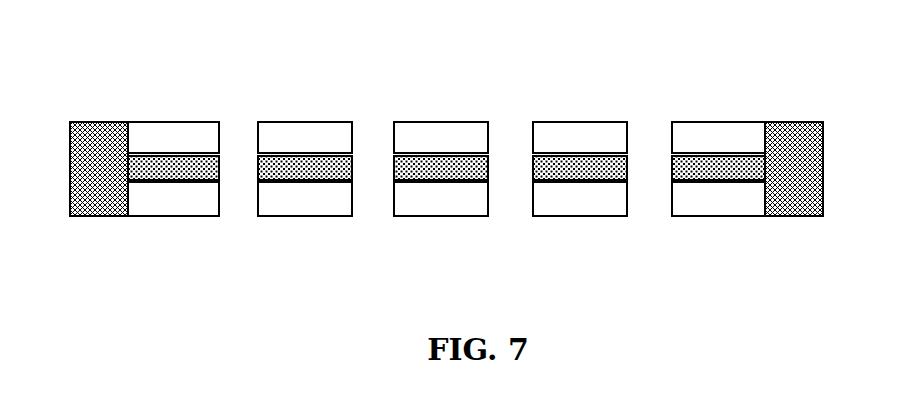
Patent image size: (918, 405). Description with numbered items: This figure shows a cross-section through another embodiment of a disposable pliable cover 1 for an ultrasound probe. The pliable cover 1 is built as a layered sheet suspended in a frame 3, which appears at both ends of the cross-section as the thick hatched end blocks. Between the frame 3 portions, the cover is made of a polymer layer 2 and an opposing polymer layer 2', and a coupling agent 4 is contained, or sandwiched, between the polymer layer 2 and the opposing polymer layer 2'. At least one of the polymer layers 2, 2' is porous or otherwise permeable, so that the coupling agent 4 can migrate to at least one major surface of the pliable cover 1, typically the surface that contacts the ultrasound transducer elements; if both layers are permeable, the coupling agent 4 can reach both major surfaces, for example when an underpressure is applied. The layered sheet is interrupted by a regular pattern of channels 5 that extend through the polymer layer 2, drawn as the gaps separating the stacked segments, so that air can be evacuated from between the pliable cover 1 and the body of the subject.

The pliable cover 1 is at (446, 158).
The polymer layer 2 is at (173, 244).
The opposing polymer layer 2' is at (173, 82).
The frame 3 is at (97, 152).
The coupling agent 4 is at (212, 180).
The channels 5 is at (248, 138).